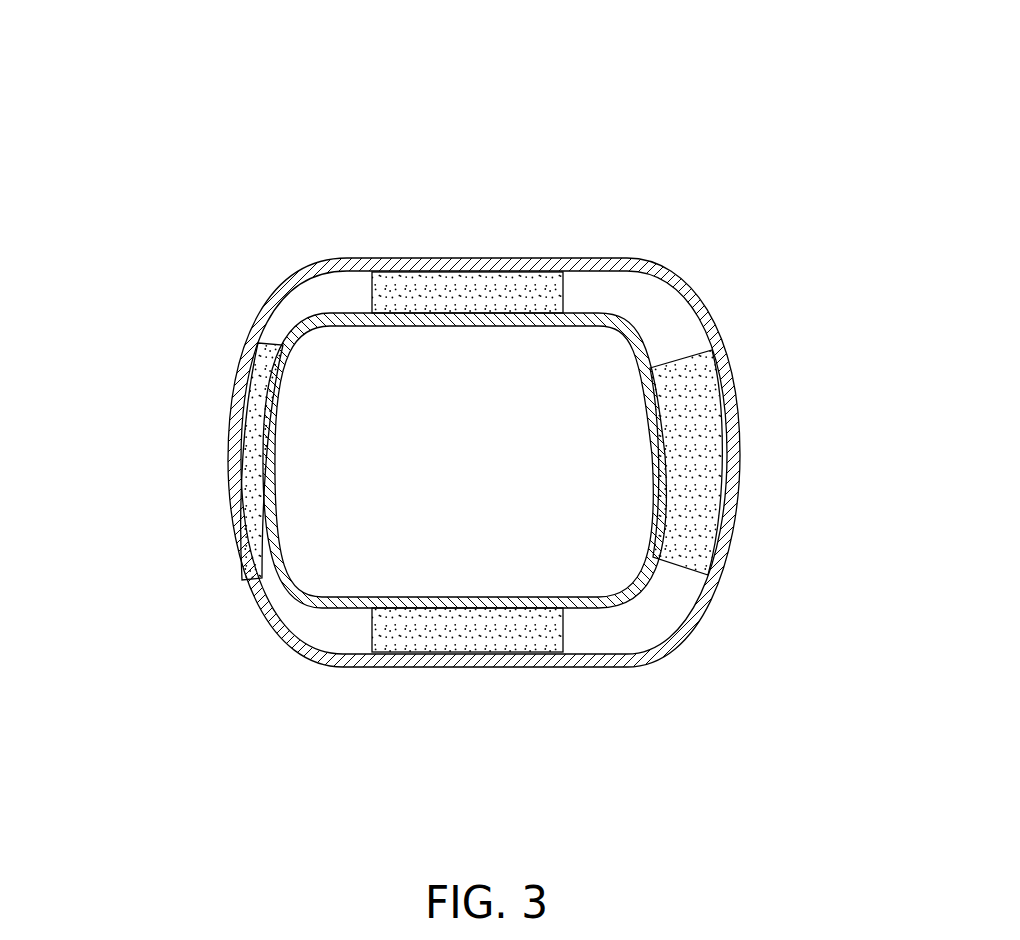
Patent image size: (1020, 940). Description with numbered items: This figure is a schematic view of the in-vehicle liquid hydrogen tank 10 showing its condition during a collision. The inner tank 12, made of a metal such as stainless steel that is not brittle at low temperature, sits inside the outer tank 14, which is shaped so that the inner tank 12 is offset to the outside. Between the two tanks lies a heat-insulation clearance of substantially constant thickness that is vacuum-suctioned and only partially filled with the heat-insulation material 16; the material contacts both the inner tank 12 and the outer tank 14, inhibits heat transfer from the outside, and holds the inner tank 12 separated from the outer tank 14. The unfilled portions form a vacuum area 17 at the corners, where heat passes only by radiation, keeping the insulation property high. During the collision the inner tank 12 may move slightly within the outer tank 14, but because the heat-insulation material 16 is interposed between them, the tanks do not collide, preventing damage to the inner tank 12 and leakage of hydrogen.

The door weather strip / seal member 10 is at (470, 127).
The inner tank 12 is at (440, 304).
The outer tank 14 is at (555, 266).
The heat-insulation material 16 is at (252, 458).
The vacuum area 17 is at (297, 617).